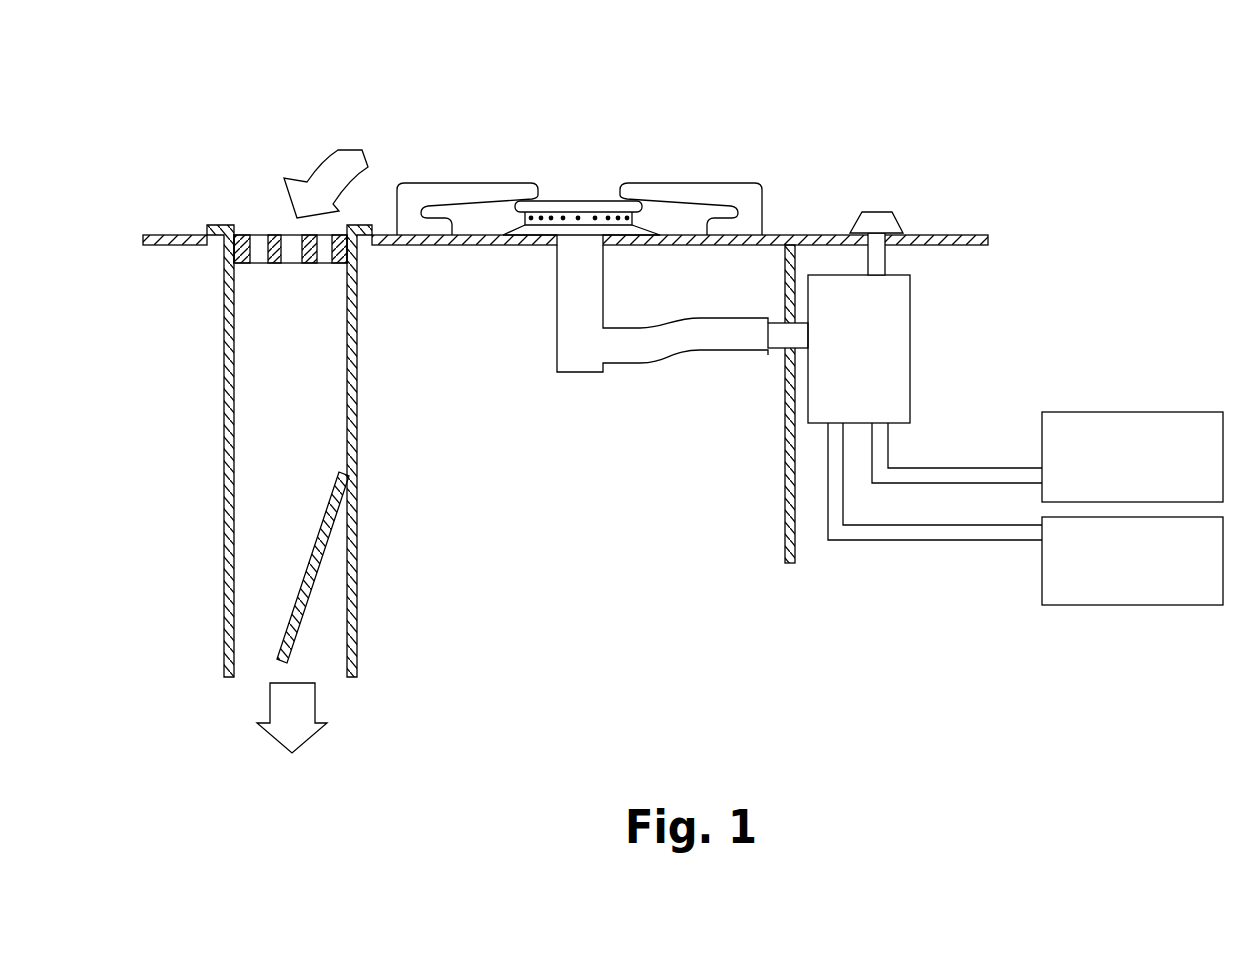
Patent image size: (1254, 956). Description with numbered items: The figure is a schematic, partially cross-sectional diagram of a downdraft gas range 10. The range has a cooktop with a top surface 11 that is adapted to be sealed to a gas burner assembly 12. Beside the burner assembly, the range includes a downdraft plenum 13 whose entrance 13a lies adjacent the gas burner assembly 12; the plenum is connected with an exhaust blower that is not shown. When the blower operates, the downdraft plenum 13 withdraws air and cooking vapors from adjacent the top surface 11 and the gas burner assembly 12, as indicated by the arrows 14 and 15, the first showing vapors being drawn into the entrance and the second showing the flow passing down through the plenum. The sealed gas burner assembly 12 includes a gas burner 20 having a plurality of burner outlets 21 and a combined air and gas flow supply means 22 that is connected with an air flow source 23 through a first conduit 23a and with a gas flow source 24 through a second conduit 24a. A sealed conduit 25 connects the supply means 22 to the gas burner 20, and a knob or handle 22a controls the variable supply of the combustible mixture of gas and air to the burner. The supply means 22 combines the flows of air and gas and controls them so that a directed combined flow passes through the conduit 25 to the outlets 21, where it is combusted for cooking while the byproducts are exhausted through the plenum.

The gas range 10 is at (896, 138).
The top surface 11 is at (961, 234).
The gas burner assembly 12 is at (610, 148).
The downdraft plenum 13 is at (224, 423).
The entrance 13a is at (290, 268).
The arrow 14 is at (322, 151).
The arrow 15 is at (316, 713).
The gas burner 20 is at (580, 200).
The burner outlets 21 is at (517, 218).
The combined air and gas flow supply means 22 is at (910, 318).
The knob or handle 22a is at (878, 211).
The air flow source 23 is at (1052, 410).
The first conduit 23a is at (975, 466).
The gas flow source 24 is at (1072, 606).
The second conduit 24a is at (877, 542).
The sealed conduit 25 is at (660, 372).